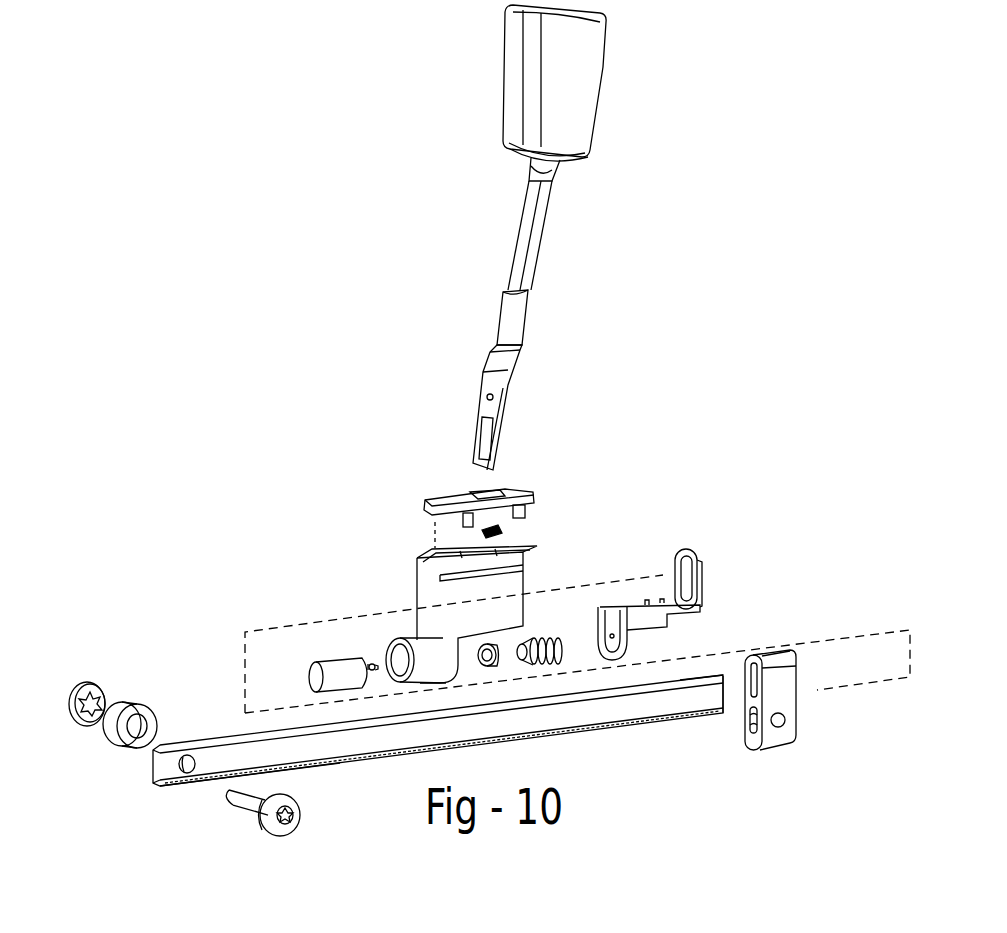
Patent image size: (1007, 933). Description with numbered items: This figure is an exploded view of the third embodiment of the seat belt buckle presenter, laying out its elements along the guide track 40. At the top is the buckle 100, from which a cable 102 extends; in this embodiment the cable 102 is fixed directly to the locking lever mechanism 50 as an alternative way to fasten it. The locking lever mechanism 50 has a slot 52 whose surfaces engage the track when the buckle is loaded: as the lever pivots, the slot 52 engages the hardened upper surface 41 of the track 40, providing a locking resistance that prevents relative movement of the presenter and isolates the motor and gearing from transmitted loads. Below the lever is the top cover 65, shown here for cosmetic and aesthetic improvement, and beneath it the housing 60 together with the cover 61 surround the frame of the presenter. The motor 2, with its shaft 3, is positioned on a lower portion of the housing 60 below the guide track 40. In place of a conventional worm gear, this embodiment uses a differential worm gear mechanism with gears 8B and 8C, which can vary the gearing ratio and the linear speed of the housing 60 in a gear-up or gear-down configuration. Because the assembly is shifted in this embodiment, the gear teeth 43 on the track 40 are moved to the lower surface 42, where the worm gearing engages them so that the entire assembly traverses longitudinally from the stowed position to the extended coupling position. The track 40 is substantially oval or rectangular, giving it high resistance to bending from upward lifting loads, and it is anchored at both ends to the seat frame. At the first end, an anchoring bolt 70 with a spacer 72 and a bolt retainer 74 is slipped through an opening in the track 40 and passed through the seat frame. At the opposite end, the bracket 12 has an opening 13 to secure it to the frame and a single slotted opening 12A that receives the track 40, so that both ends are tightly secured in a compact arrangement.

The buckle 100 is at (582, 100).
The cable 102 is at (522, 262).
The locking lever mechanism 50 is at (498, 387).
The slot 52 is at (483, 430).
The top cover 65 is at (455, 505).
The housing 60 is at (497, 588).
The cover 61 is at (694, 556).
The slotted opening 12A is at (752, 680).
The bracket 12 is at (786, 660).
The opening 13 is at (781, 722).
The guide track 40 is at (562, 705).
The upper surface 41 is at (682, 682).
The lower surface 42 is at (687, 717).
The gear teeth 43 is at (333, 762).
The gear 8C is at (489, 667).
The gear 8B is at (540, 638).
The motor 2 is at (337, 672).
The shaft 3 is at (372, 664).
The bolt retainer 74 is at (89, 682).
The spacer 72 is at (116, 745).
The anchoring bolt 70 is at (242, 806).